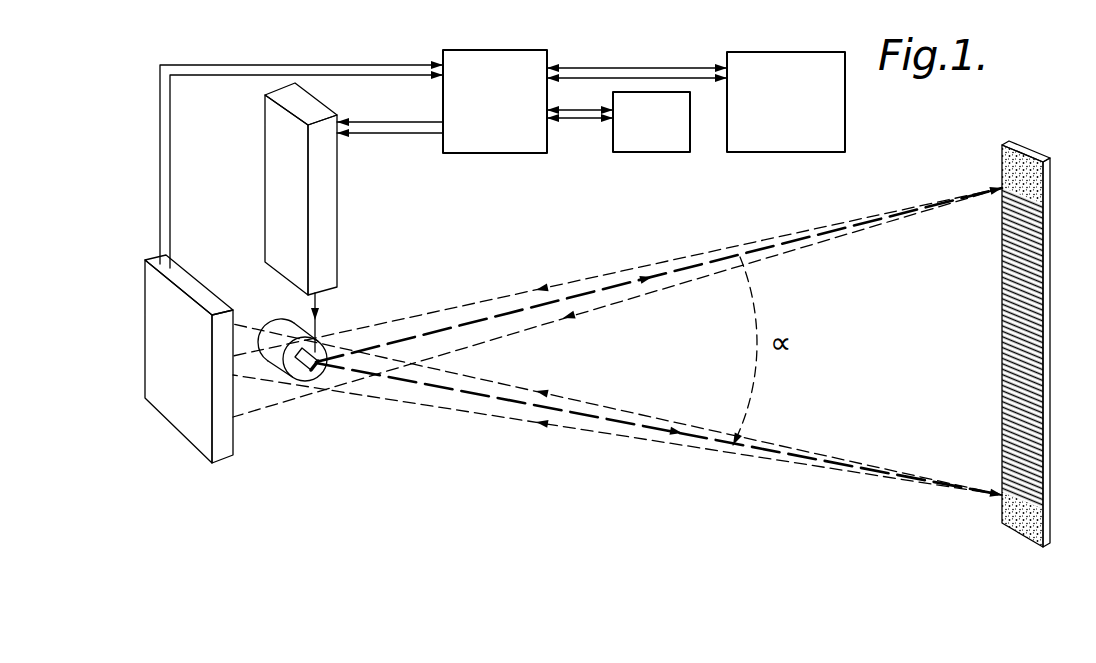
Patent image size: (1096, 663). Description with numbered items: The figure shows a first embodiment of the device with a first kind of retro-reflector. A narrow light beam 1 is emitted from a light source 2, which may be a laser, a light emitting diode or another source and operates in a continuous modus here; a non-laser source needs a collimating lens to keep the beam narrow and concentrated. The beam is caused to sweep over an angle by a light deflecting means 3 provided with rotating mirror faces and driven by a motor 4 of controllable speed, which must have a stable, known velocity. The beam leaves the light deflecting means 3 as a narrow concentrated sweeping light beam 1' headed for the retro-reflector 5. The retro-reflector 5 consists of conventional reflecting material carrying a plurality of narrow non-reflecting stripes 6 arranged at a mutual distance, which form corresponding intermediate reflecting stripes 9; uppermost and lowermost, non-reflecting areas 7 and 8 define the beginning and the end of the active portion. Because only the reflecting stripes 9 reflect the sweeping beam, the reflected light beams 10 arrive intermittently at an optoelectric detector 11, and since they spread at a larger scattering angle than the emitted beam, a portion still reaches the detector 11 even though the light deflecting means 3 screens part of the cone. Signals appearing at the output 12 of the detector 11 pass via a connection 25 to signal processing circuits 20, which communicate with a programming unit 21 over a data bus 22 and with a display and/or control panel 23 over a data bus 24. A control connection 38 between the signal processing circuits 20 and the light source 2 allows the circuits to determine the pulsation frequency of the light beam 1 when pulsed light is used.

The light beam 1 is at (337, 313).
The sweeping light beam 1' is at (659, 341).
The light source 2 is at (331, 200).
The light deflecting means 3 is at (311, 380).
The motor 4 is at (283, 321).
The retro-reflector 5 is at (1048, 220).
The non-reflecting stripes 6 is at (1009, 244).
The upper non-reflecting area 7 is at (1003, 167).
The lower non-reflecting area 8 is at (1000, 507).
The reflecting stripes 9 is at (1046, 245).
The reflected light beams 10 is at (703, 277).
The optoelectric detector 11 is at (201, 433).
The output 12 is at (178, 262).
The signal processing circuits 20 is at (507, 62).
The programming unit 21 is at (768, 62).
The data bus 22 is at (645, 67).
The display and/or control panel 23 is at (640, 145).
The data bus 24 is at (580, 119).
The connection 25 is at (293, 65).
The control connection 38 is at (400, 128).